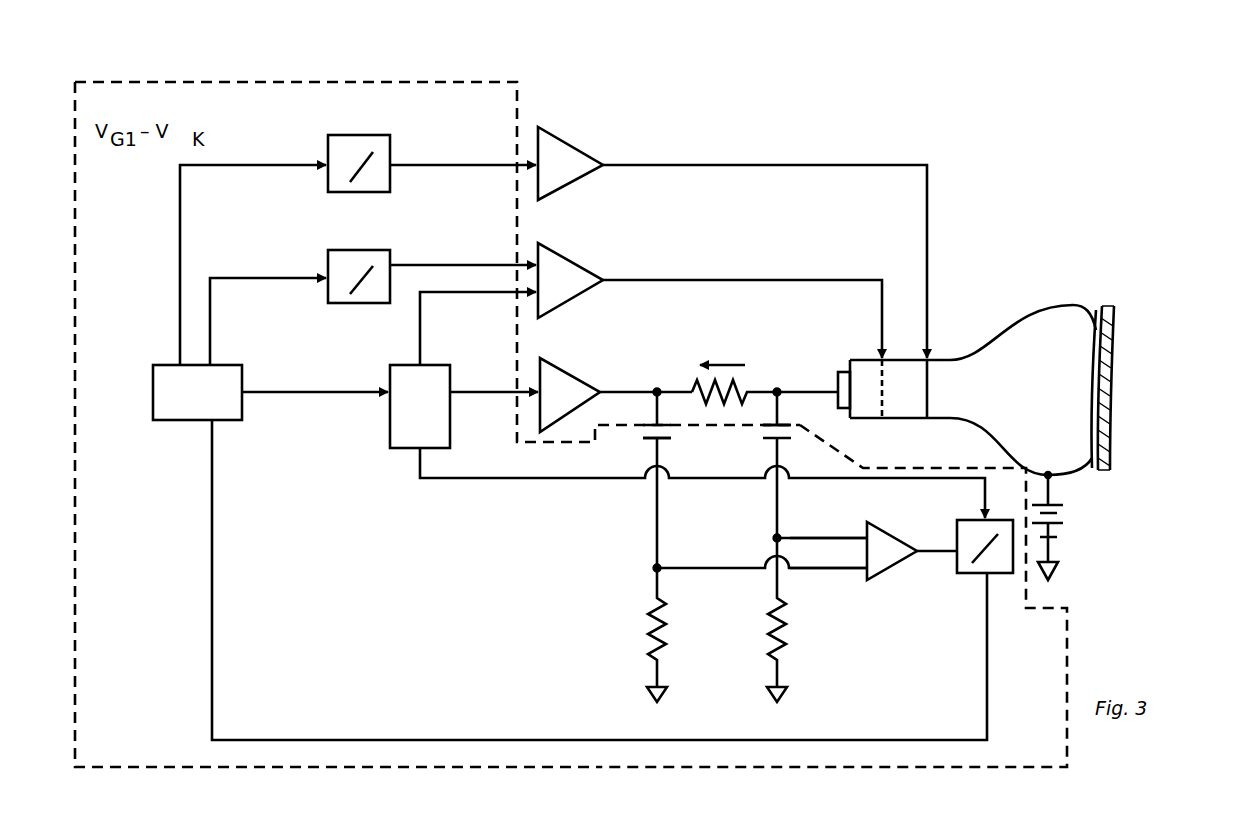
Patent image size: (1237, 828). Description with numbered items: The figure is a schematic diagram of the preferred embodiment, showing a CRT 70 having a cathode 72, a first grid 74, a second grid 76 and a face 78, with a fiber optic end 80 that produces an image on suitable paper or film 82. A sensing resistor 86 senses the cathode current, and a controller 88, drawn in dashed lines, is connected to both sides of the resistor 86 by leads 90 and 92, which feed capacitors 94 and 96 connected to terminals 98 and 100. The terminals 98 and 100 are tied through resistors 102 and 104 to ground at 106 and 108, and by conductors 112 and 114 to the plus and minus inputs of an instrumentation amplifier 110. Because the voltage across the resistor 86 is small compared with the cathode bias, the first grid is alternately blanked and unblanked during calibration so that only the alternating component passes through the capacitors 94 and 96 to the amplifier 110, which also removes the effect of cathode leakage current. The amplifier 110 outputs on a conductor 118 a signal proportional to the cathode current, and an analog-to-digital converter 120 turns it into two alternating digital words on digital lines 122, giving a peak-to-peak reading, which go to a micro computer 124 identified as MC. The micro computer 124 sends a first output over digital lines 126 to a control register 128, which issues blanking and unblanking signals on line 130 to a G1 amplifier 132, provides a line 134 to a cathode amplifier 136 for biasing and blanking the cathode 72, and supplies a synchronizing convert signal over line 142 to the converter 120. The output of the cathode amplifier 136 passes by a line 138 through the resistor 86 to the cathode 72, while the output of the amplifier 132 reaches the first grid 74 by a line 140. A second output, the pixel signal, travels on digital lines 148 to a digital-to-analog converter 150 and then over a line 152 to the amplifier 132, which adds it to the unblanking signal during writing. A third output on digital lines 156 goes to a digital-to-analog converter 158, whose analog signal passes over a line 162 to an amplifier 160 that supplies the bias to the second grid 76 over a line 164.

The CRT 70 is at (952, 438).
The cathode 72 is at (755, 378).
The first grid 74 is at (885, 385).
The second grid 76 is at (930, 380).
The face 78 is at (1090, 330).
The fiber optic end 80 is at (1100, 470).
The paper or film 82 is at (1114, 390).
The sensing resistor 86 is at (742, 392).
The controller 88 is at (385, 82).
The lead 90 is at (785, 418).
The lead 92 is at (660, 406).
The capacitor 94 is at (785, 445).
The capacitor 96 is at (655, 445).
The terminal 98 is at (775, 538).
The terminal 100 is at (655, 568).
The resistor 102 is at (780, 632).
The resistor 104 is at (655, 628).
The ground 106 is at (786, 692).
The ground 108 is at (648, 692).
The instrumentation amplifier 110 is at (890, 524).
The conductor 112 is at (800, 538).
The conductor 114 is at (803, 568).
The conductor 118 is at (935, 552).
The analog-to-digital converter 120 is at (968, 573).
The digital lines 122 is at (987, 640).
The micro computer 124 is at (160, 420).
The digital lines 126 is at (285, 392).
The control register 128 is at (390, 432).
The line 130 is at (420, 306).
The G1 amplifier 132 is at (580, 262).
The line 134 is at (486, 394).
The cathode amplifier 136 is at (583, 385).
The line 138 is at (646, 374).
The line 140 is at (710, 280).
The line 142 is at (442, 478).
The digital lines 148 is at (210, 322).
The digital-to-analog converter 150 is at (355, 250).
The line 152 is at (448, 265).
The digital lines 156 is at (180, 232).
The digital-to-analog converter 158 is at (355, 135).
The amplifier 160 is at (580, 147).
The line 162 is at (462, 165).
The line 164 is at (760, 165).